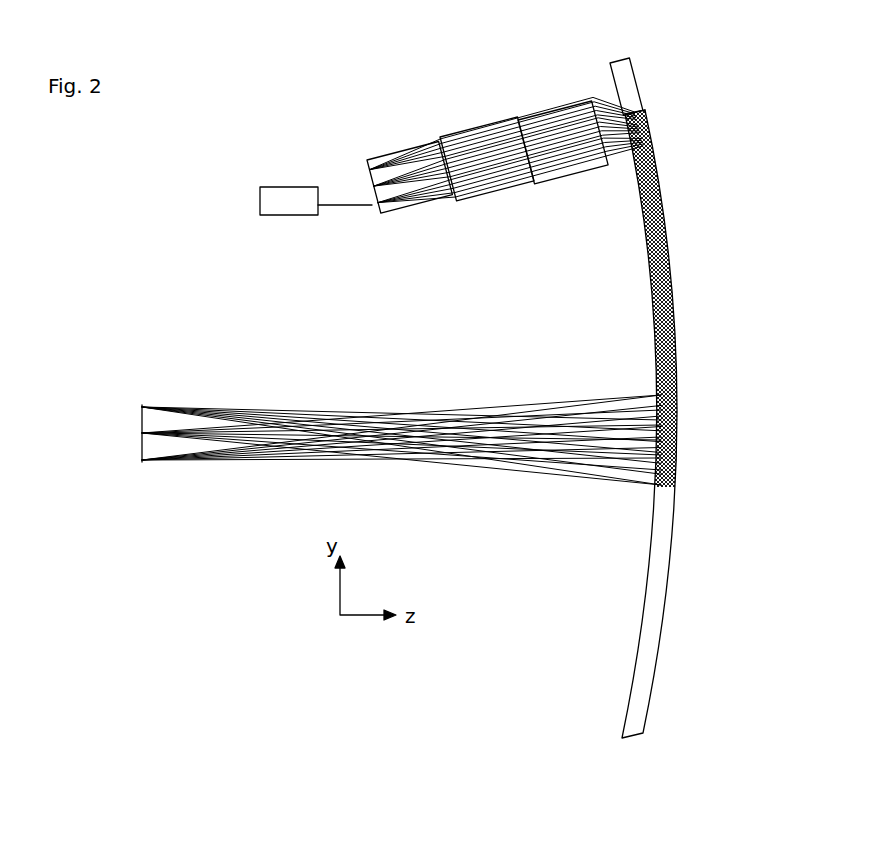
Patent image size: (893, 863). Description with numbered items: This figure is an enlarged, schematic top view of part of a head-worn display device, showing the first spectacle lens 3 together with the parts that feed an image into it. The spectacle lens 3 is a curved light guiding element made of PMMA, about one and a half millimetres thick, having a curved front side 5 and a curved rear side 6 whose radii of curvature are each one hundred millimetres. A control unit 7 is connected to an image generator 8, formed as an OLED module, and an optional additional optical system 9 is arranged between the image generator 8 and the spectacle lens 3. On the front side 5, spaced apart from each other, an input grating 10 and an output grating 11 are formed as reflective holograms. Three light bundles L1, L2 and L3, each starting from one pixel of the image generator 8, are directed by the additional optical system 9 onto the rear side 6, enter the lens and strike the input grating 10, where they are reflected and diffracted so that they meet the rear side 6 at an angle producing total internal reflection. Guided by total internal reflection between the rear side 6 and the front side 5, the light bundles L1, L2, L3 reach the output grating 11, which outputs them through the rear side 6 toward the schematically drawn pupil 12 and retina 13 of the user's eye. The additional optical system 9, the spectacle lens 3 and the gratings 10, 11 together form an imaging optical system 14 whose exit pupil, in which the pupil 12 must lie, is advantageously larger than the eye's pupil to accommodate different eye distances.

The first spectacle lens 3 is at (668, 613).
The front side 5 is at (643, 103).
The rear side 6 is at (613, 83).
The control unit 7 is at (260, 200).
The image generator 8 is at (370, 178).
The additional optical system 9 is at (482, 128).
The input grating 10 is at (636, 133).
The output grating 11 is at (679, 443).
The pupil 12 is at (395, 413).
The retina 13 is at (141, 420).
The imaging optical system 14 is at (655, 150).
The light bundle L1 is at (412, 158).
The light bundle L2 is at (386, 185).
The light bundle L3 is at (418, 197).